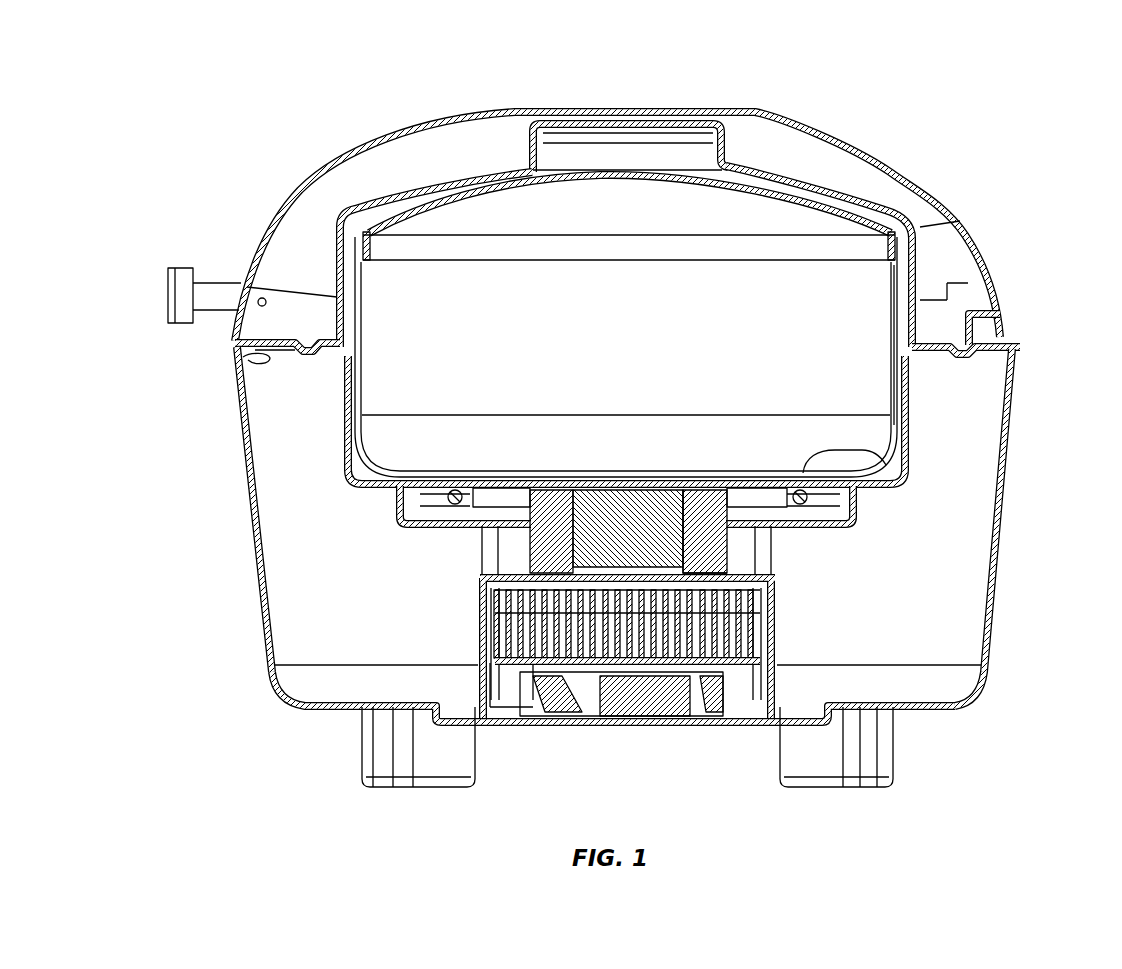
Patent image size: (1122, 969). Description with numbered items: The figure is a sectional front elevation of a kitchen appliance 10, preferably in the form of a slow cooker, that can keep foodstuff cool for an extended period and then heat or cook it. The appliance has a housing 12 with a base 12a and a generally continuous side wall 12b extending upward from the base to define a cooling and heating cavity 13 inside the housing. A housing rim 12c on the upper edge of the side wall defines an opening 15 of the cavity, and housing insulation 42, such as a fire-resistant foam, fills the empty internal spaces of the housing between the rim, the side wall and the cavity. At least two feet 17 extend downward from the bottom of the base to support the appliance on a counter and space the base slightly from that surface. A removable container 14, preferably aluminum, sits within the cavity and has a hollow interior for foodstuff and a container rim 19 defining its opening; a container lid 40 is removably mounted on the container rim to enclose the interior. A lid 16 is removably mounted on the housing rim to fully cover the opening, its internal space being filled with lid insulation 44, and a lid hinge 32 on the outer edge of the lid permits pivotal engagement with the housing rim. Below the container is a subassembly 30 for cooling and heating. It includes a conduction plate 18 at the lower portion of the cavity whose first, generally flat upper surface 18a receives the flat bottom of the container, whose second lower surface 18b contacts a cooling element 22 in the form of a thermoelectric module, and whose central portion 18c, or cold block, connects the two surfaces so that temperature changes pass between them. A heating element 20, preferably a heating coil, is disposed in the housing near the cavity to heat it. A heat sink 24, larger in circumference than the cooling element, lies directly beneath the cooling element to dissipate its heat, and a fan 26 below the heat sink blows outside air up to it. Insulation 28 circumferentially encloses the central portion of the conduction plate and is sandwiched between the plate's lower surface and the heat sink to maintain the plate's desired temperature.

The kitchen appliance 10 is at (343, 138).
The housing 12 is at (992, 640).
The base 12a is at (340, 710).
The side wall 12b is at (258, 528).
The housing rim 12c is at (240, 358).
The cooling and heating cavity 13 is at (363, 466).
The container 14 is at (855, 388).
The opening 15 is at (919, 370).
The lid 16 is at (606, 110).
The feet 17 is at (840, 790).
The conduction plate 18 is at (665, 527).
The first upper surface 18a is at (848, 449).
The second lower surface 18b is at (545, 584).
The central portion 18c is at (547, 550).
The container rim 19 is at (333, 243).
The heating element 20 is at (458, 499).
The cooling element 22 is at (772, 586).
The heat sink 24 is at (752, 603).
The fan 26 is at (621, 690).
The insulation 28 is at (548, 562).
The subassembly 30 is at (955, 586).
The lid hinge 32 is at (974, 300).
The container lid 40 is at (770, 193).
The housing insulation 42 is at (296, 572).
The lid insulation 44 is at (355, 192).